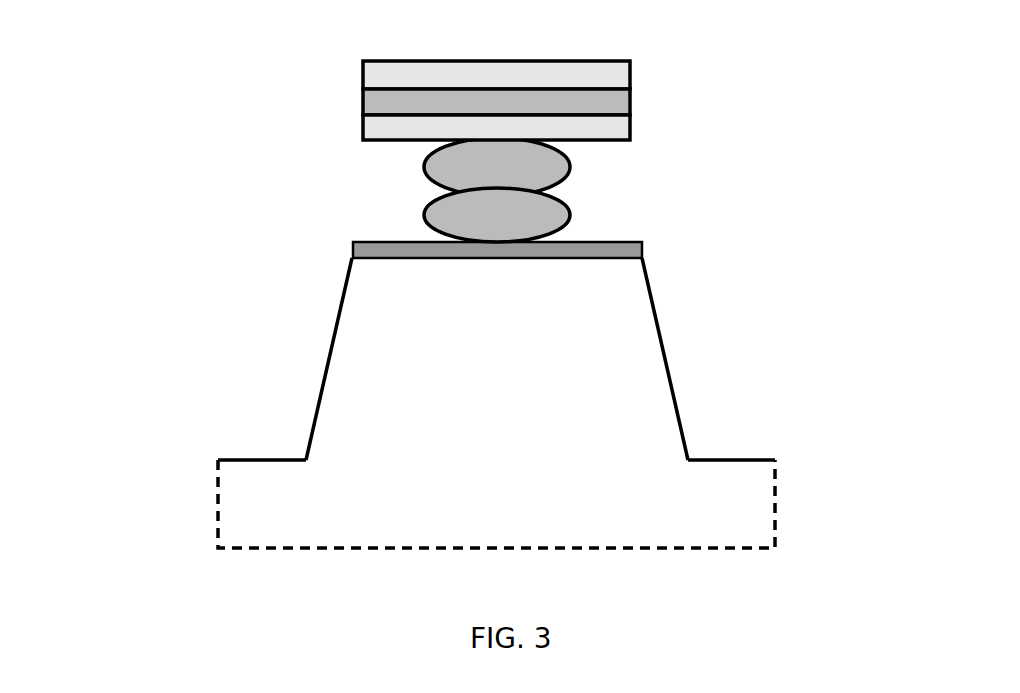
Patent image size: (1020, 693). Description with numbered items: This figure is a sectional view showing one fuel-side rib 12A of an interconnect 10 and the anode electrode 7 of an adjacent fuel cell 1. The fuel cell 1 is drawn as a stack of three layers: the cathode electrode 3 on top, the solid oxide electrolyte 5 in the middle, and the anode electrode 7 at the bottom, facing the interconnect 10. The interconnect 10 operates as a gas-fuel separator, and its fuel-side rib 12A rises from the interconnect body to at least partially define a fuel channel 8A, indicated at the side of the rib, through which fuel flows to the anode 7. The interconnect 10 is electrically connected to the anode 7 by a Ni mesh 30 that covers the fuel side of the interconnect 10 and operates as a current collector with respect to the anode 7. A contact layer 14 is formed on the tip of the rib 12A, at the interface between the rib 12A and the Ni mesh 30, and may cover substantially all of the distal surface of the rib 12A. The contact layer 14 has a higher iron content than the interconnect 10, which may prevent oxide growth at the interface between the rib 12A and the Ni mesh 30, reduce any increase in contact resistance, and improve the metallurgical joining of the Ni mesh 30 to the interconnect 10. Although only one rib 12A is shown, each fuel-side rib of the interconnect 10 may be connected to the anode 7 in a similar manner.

The fuel cell 1 is at (334, 93).
The cathode electrode 3 is at (363, 72).
The solid oxide electrolyte 5 is at (363, 99).
The anode electrode 7 is at (363, 125).
The Ni mesh 30 is at (570, 220).
The contact layer 14 is at (352, 250).
The fuel-side rib 12A is at (483, 355).
The interconnect 10 is at (466, 520).
The fuel channel 8A is at (753, 400).